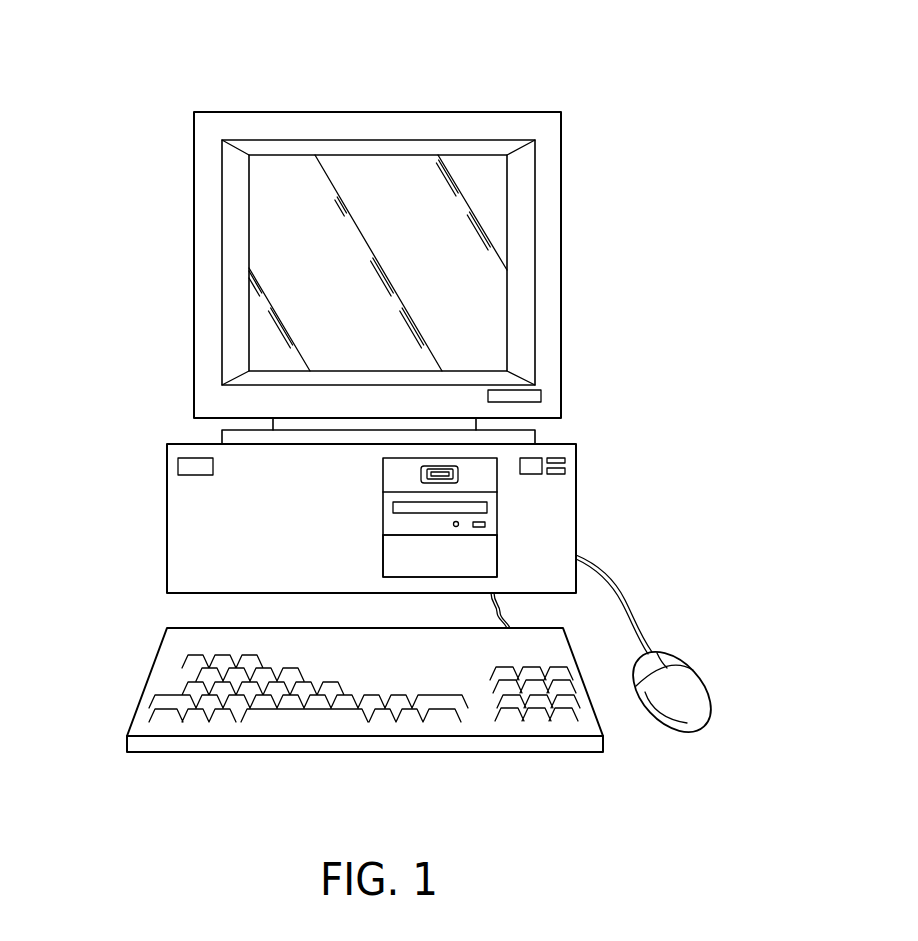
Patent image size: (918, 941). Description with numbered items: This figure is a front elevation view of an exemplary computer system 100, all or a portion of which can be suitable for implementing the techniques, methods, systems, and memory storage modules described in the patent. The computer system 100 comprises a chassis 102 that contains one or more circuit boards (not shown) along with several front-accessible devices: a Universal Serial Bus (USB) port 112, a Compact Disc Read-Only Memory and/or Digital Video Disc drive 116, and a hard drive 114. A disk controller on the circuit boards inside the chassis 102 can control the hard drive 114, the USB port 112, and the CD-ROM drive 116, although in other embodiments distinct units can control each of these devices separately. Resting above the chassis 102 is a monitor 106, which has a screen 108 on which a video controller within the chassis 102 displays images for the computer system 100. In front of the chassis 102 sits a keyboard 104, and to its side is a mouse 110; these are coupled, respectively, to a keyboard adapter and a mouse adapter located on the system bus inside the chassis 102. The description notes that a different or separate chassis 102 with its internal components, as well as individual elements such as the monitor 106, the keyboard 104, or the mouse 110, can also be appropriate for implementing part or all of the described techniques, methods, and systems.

The computer system 100 is at (556, 86).
The chassis 102 is at (167, 522).
The keyboard 104 is at (148, 677).
The monitor 106 is at (270, 112).
The screen 108 is at (297, 268).
The mouse 110 is at (693, 677).
The Universal Serial Bus (USB) port 112 is at (458, 470).
The hard drive 114 is at (487, 553).
The Compact Disc Read-Only Memory (CD-ROM) and/or Digital Video Disc (DVD) drive 116 is at (488, 515).